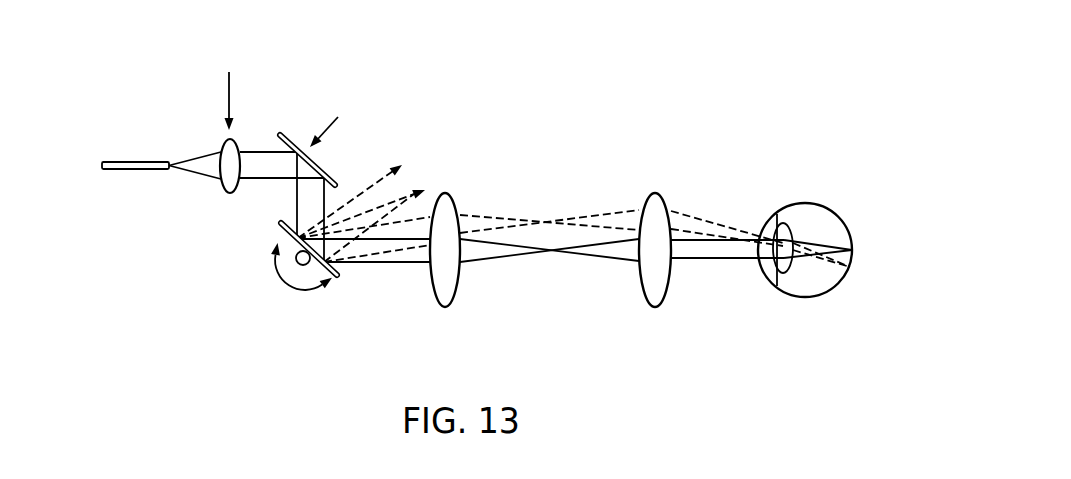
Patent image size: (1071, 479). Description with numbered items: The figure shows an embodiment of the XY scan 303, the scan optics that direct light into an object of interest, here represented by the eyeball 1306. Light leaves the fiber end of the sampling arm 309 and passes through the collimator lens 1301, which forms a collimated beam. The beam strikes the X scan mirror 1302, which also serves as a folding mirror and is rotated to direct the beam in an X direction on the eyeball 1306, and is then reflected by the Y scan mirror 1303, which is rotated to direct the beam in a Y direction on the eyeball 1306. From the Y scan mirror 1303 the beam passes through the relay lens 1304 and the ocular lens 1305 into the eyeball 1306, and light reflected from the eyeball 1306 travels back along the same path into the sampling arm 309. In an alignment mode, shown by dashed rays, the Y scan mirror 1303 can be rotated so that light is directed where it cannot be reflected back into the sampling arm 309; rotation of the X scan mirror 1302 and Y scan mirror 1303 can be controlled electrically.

The XY scan 303 is at (541, 62).
The sampling arm 309 is at (120, 171).
The collimator lens 1301 is at (227, 193).
The X scan mirror 1302 is at (325, 165).
The Y scan mirror 1303 is at (335, 281).
The relay lens 1304 is at (458, 282).
The ocular lens 1305 is at (671, 282).
The eyeball 1306 is at (810, 297).